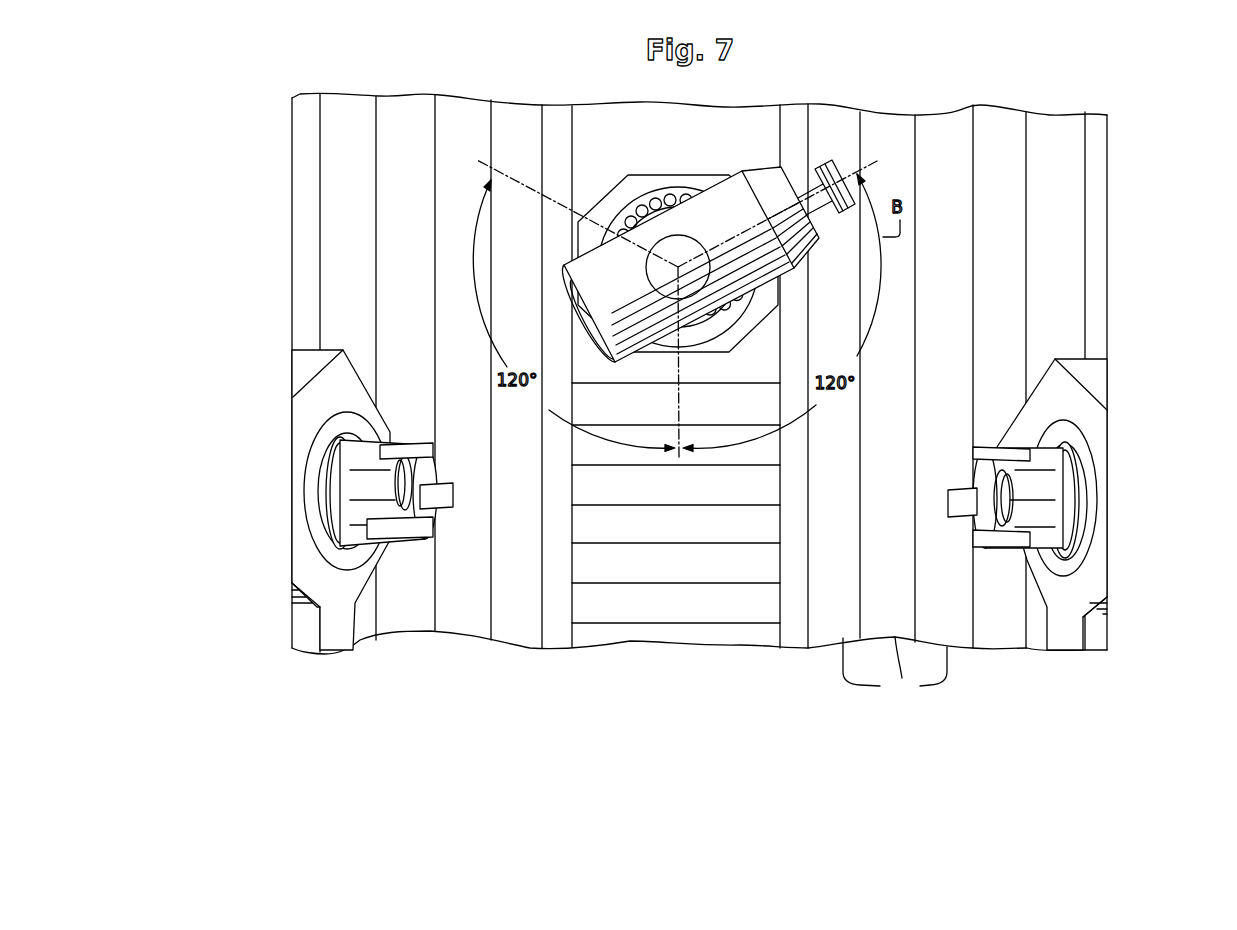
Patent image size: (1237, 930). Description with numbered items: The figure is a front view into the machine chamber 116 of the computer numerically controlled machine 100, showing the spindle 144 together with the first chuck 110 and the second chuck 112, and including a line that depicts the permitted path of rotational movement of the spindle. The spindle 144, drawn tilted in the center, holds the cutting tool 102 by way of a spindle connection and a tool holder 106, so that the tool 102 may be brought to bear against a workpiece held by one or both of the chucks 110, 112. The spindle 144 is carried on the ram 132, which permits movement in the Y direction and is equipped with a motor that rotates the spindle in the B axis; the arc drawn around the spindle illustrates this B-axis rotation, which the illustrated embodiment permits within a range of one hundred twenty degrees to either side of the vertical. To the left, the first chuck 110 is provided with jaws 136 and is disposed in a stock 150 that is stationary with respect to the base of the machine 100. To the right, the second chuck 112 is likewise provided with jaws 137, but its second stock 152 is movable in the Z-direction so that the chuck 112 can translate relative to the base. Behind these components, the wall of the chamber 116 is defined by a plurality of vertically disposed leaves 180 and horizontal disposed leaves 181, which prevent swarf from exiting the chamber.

The computer numerically controlled machine 100 is at (336, 80).
The cutting tool 102 is at (832, 161).
The tool holder 106 is at (805, 192).
The first chuck 110 is at (343, 410).
The second chuck 112 is at (1058, 481).
The machine chamber 116 is at (681, 570).
The ram 132 is at (620, 225).
The jaws 136 is at (437, 458).
The jaws 137 is at (968, 464).
The spindle 144 is at (688, 214).
The stock 150 is at (318, 420).
The second stock 152 is at (1095, 560).
The vertically disposed leaves 180 is at (895, 670).
The horizontal disposed leaves 181 is at (784, 523).